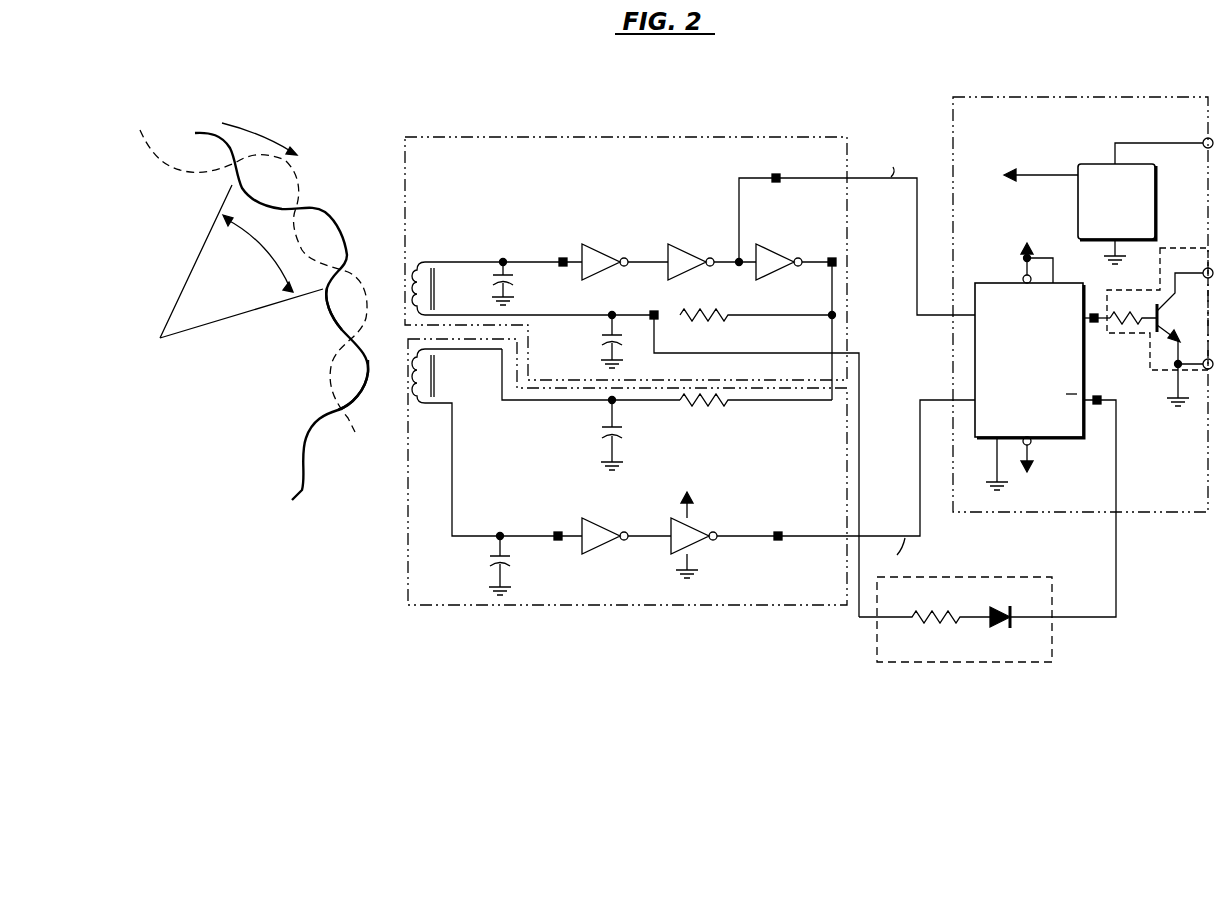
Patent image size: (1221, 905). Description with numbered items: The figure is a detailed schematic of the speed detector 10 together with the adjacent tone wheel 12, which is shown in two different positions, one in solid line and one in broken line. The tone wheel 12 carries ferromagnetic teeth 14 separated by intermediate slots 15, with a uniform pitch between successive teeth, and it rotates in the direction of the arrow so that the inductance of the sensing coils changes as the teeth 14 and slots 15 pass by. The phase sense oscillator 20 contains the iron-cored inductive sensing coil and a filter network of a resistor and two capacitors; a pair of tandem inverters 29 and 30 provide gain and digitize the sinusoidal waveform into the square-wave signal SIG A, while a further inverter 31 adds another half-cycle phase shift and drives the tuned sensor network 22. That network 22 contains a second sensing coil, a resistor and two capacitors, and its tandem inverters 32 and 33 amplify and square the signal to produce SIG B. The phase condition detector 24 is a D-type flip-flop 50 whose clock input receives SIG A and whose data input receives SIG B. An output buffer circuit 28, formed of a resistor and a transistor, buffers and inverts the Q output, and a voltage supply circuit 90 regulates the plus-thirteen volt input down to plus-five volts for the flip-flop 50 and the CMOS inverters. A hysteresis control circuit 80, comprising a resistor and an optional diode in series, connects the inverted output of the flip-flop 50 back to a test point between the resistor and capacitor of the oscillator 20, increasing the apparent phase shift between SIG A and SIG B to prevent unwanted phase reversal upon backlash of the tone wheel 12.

The speed detector 10 is at (440, 62).
The tone wheel 12 is at (283, 366).
The teeth 14 is at (368, 375).
The slots 15 is at (332, 308).
The phase sense oscillator 20 is at (402, 164).
The tuned sensor network 22 is at (404, 538).
The phase condition detector 24 is at (1060, 92).
The output buffer circuit 28 is at (1183, 248).
The inverter 29 is at (600, 252).
The inverter 30 is at (684, 252).
The inverter 31 is at (771, 252).
The inverter 32 is at (600, 526).
The inverter 33 is at (696, 525).
The D-type flip-flop 50 is at (1000, 283).
The hysteresis control circuit 80 is at (877, 637).
The voltage supply circuit 90 is at (1102, 164).